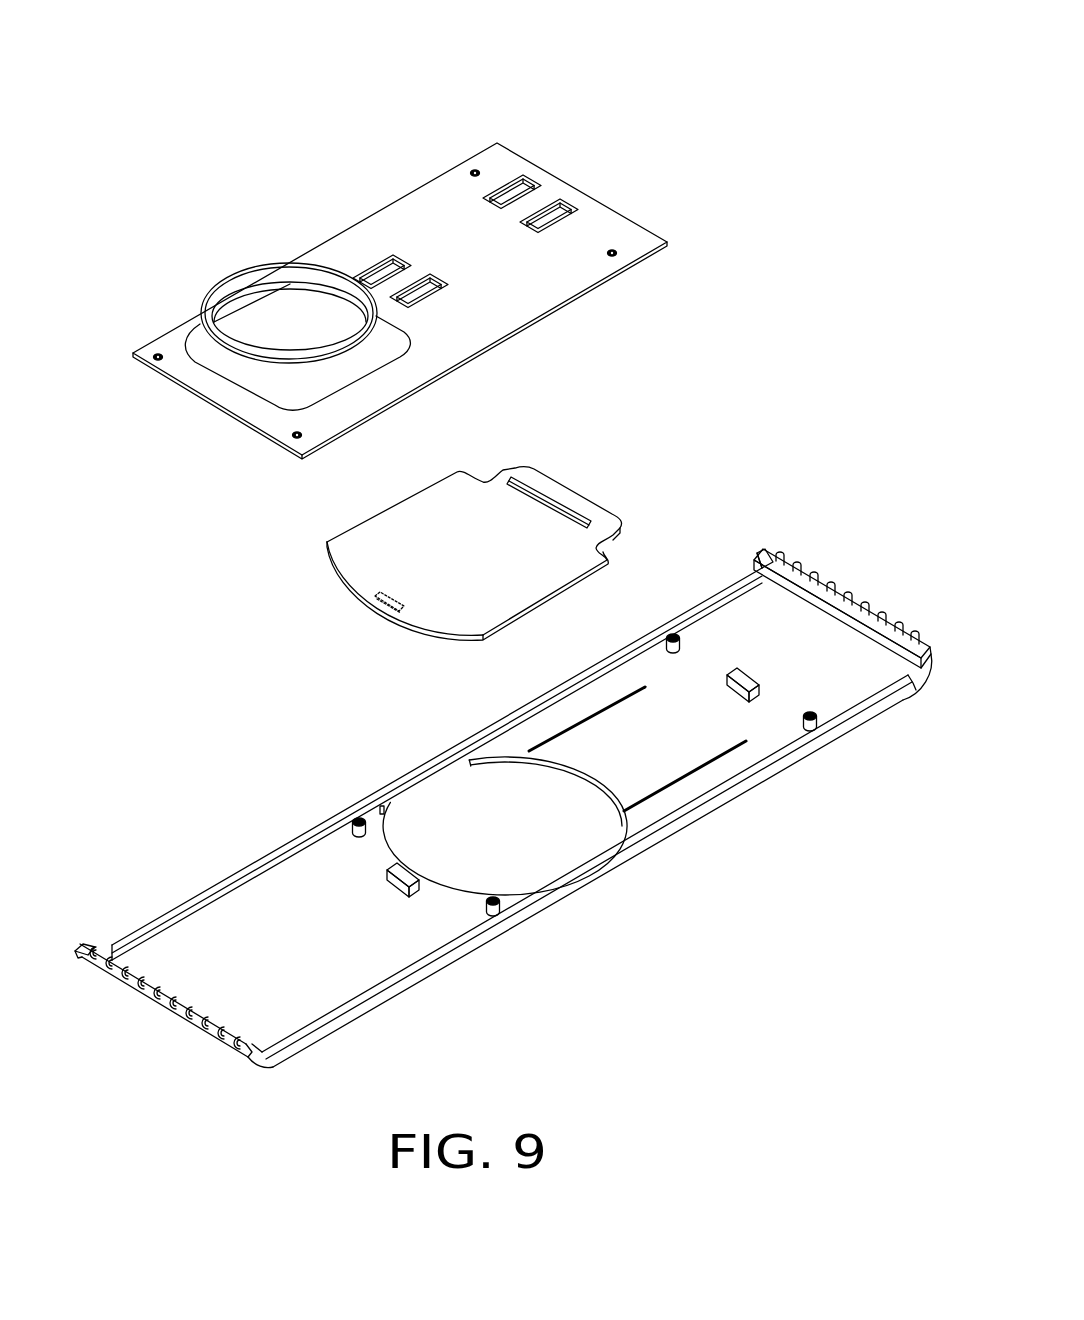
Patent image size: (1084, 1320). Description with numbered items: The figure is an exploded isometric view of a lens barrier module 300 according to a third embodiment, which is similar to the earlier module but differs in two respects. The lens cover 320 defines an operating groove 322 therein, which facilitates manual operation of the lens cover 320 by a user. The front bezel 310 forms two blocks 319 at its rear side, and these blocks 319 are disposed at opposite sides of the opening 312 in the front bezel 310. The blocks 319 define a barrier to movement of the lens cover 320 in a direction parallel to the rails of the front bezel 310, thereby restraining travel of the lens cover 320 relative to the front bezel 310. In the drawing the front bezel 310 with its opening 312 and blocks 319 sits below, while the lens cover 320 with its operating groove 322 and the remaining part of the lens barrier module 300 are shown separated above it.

The lens barrier module 300 is at (400, 229).
The front bezel 310 is at (821, 558).
The opening 312 is at (457, 815).
The block 319 is at (390, 870).
The lens cover 320 is at (627, 498).
The operating groove 322 is at (392, 604).